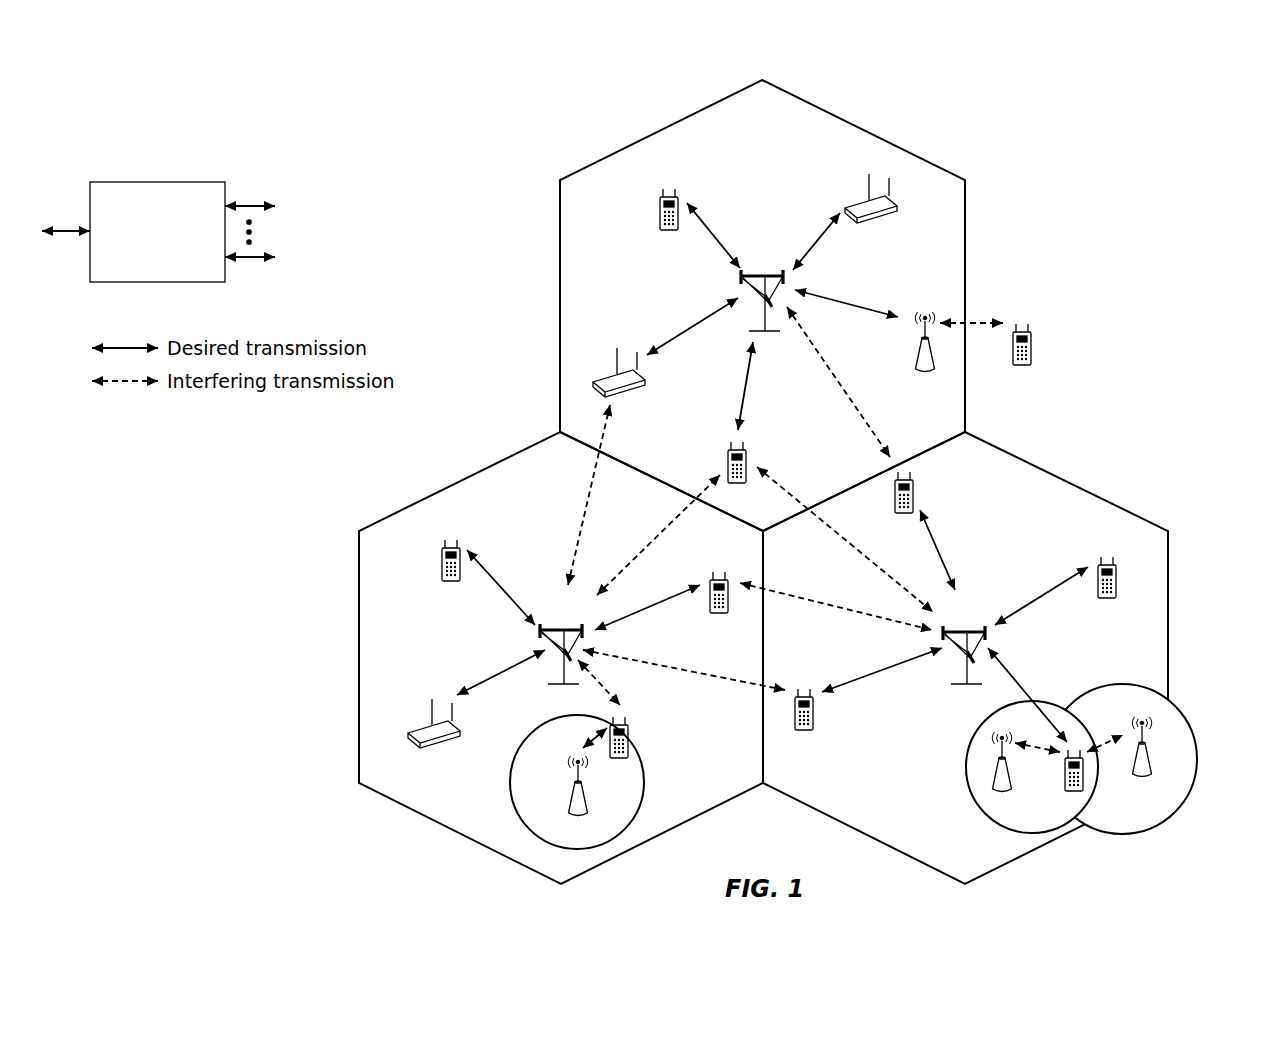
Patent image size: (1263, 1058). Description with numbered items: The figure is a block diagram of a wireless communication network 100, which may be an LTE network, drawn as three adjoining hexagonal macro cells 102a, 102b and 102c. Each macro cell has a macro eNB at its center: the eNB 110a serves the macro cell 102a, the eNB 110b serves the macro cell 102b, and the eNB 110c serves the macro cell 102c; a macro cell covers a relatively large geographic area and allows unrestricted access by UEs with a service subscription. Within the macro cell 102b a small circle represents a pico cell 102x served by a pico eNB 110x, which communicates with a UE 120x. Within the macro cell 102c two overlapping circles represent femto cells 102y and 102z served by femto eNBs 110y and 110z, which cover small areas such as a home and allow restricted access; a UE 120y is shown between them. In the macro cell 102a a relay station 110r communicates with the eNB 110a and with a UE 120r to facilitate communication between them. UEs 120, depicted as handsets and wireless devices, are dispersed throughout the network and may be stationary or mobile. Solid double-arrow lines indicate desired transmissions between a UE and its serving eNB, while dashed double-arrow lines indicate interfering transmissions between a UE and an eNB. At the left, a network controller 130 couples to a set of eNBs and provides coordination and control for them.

The wireless communication network 100 is at (1100, 146).
The macro cell 102a is at (866, 130).
The macro cell 102b is at (458, 481).
The macro cell 102c is at (1070, 482).
The pico cell 102x is at (527, 735).
The femto cell 102y is at (968, 735).
The femto cell 102z is at (1118, 684).
The macro eNB 110a is at (757, 275).
The macro eNB 110b is at (560, 628).
The macro eNB 110c is at (965, 629).
The relay station 110r is at (918, 360).
The pico eNB 110x is at (587, 806).
The femto eNB 110y is at (1012, 780).
The femto eNB 110z is at (1150, 770).
The UE 120 is at (660, 207).
The UE 120r is at (1046, 375).
The UE 120x is at (628, 738).
The UE 120y is at (1065, 785).
The network controller 130 is at (150, 181).